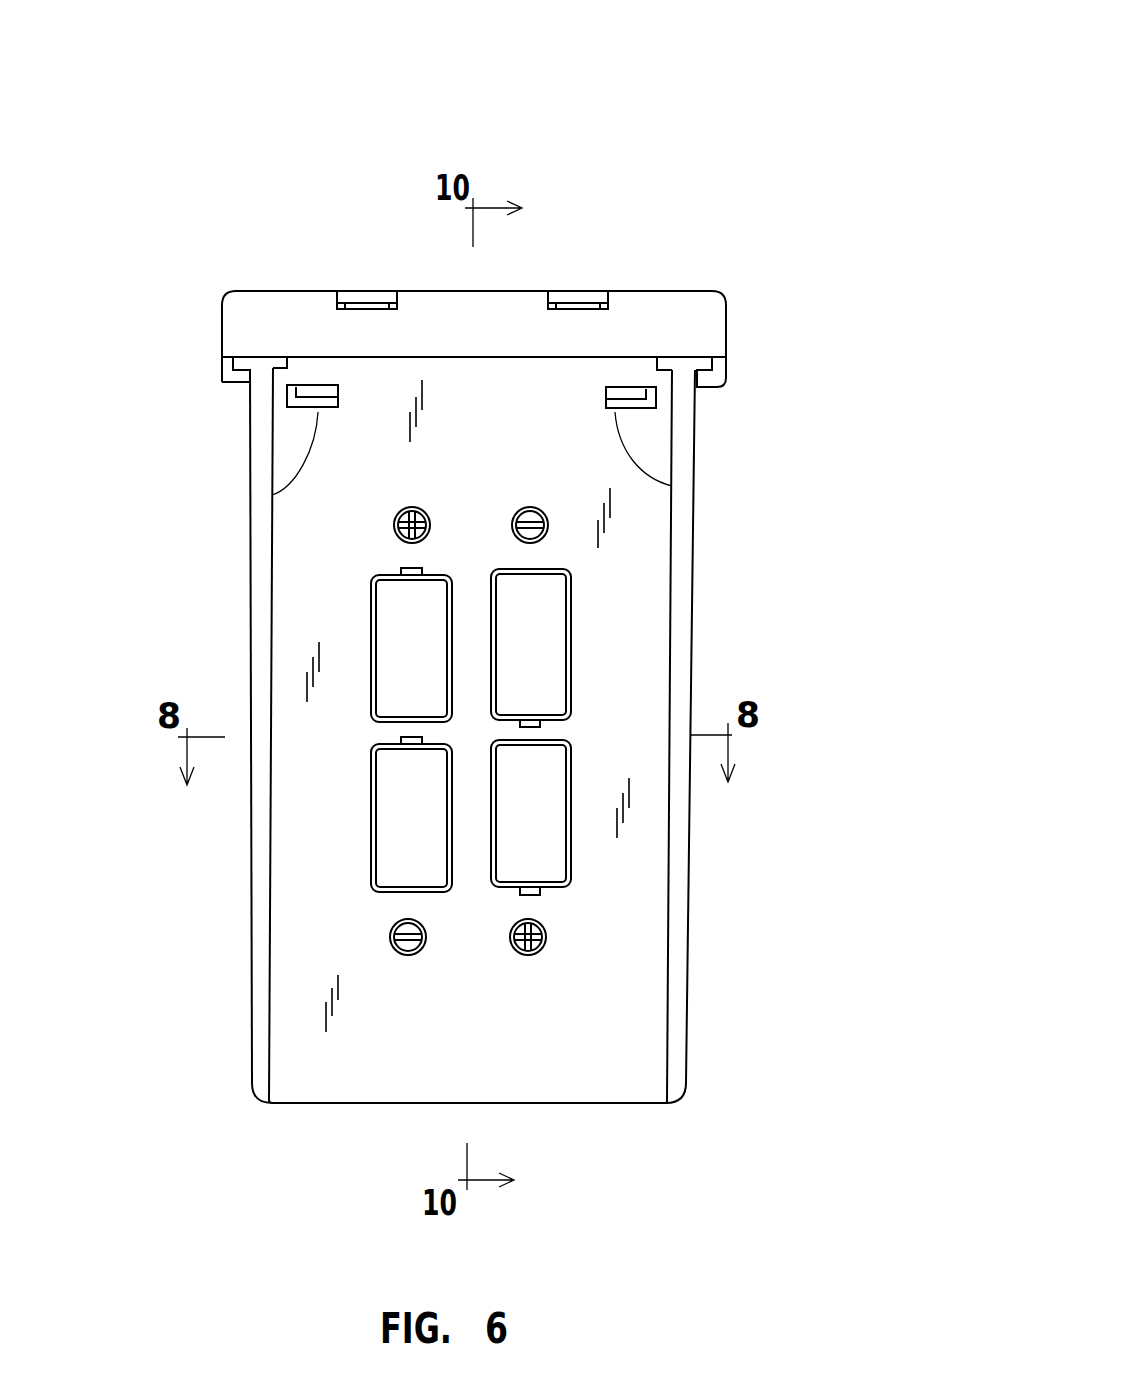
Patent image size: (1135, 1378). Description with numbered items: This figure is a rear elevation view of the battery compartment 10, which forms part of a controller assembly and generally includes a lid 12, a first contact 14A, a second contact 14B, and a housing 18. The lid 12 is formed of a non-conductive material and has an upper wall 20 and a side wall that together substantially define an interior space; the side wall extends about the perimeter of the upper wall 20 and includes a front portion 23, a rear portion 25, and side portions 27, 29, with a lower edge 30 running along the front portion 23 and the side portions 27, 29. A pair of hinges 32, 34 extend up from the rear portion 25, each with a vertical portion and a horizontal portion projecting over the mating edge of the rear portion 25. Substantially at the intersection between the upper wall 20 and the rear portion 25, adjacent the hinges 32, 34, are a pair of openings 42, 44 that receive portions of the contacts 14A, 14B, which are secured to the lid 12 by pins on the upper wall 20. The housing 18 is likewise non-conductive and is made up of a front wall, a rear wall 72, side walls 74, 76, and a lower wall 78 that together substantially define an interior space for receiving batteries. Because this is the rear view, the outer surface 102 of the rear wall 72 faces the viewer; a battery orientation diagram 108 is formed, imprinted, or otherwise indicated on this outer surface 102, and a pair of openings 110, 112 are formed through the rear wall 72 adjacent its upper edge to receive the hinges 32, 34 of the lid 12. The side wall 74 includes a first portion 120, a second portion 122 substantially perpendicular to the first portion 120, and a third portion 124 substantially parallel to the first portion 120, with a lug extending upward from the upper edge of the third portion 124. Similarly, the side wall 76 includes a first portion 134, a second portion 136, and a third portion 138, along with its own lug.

The battery compartment 10 is at (797, 108).
The lid 12 is at (731, 270).
The first contact 14A is at (365, 284).
The second contact 14B is at (570, 282).
The housing 18 is at (225, 963).
The upper wall 20 is at (425, 296).
The front portion 23 is at (258, 302).
The rear portion 25 is at (498, 338).
The side portion 27 is at (726, 322).
The side portion 29 is at (222, 327).
The lower edge 30 is at (223, 383).
The hinge 32 is at (299, 405).
The hinge 34 is at (648, 398).
The opening 42 is at (347, 300).
The opening 44 is at (598, 300).
The rear wall 72 is at (354, 1070).
The side wall 74 is at (703, 937).
The side wall 76 is at (226, 873).
The lower wall 78 is at (582, 1105).
The outer surface 102 is at (492, 1034).
The battery orientation diagram 108 is at (572, 598).
The opening 110 is at (253, 498).
The opening 112 is at (672, 492).
The first portion 120 is at (688, 838).
The second portion 122 is at (680, 555).
The third portion 124 is at (672, 665).
The first portion 134 is at (252, 820).
The second portion 136 is at (262, 575).
The third portion 138 is at (272, 630).